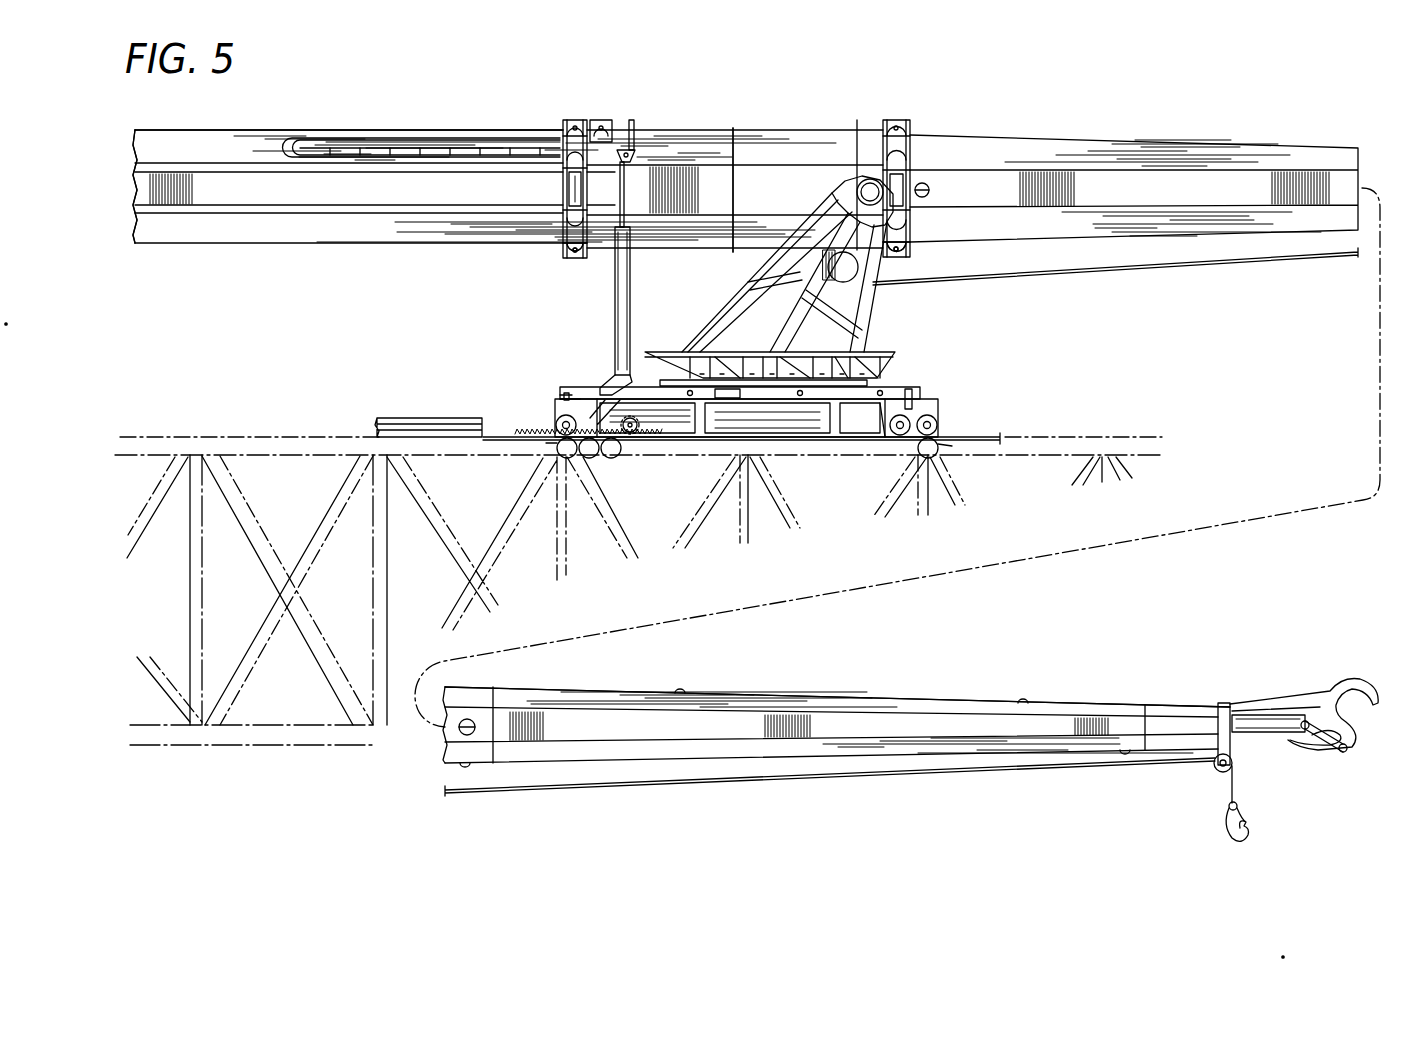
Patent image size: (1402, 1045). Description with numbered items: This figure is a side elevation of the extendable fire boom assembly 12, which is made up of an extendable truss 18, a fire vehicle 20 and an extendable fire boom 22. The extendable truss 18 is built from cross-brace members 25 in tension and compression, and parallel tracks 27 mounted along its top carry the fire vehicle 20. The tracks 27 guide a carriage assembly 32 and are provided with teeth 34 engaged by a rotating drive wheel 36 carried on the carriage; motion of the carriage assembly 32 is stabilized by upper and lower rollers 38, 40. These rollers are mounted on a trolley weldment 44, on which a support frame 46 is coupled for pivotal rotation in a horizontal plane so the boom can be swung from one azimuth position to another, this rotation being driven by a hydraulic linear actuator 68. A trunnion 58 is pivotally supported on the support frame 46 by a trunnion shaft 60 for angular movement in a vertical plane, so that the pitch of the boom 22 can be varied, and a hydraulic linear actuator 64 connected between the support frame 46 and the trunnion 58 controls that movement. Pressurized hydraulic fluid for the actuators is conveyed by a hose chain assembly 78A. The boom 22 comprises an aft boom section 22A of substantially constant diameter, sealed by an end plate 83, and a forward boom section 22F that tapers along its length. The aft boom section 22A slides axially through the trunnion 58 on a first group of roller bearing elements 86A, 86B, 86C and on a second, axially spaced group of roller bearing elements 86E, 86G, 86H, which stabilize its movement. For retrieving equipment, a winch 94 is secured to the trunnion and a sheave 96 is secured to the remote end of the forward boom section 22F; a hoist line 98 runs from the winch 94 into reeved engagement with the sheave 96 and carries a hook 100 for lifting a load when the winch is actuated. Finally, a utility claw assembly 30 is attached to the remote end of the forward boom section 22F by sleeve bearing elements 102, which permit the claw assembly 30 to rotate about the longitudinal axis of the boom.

The extendable fire boom assembly 12 is at (930, 75).
The extendable truss 18 is at (195, 437).
The fire vehicle 20 is at (535, 347).
The extendable fire boom 22 is at (1230, 138).
The aft boom section 22A is at (247, 130).
The forward boom section 22F is at (798, 692).
The cross-brace members 25 is at (318, 665).
The parallel tracks 27 is at (1000, 437).
The utility claw assembly 30 is at (1300, 690).
The carriage assembly 32 is at (925, 408).
The teeth 34 is at (525, 430).
The drive wheel 36 is at (640, 428).
The upper rollers 38 is at (560, 418).
The lower rollers 40 is at (618, 458).
The trolley weldment 44 is at (590, 400).
The support frame 46 is at (740, 290).
The trunnion 58 is at (765, 132).
The trunnion shaft 60 is at (862, 180).
The hydraulic linear actuator 64 is at (613, 310).
The hydraulic linear actuator 68 is at (890, 385).
The hose chain assembly 78A is at (430, 152).
The end plate 83 is at (135, 188).
The roller bearing element 86A is at (575, 120).
The roller bearing element 86B is at (572, 190).
The roller bearing element 86C is at (575, 258).
The roller bearing element 86E is at (895, 120).
The roller bearing element 86G is at (900, 258).
The roller bearing element 86H is at (930, 190).
The winch 94 is at (843, 283).
The sheave 96 is at (1215, 770).
The hoist line 98 is at (1170, 270).
The hook 100 is at (1228, 838).
The sleeve bearing elements 102 is at (1235, 705).